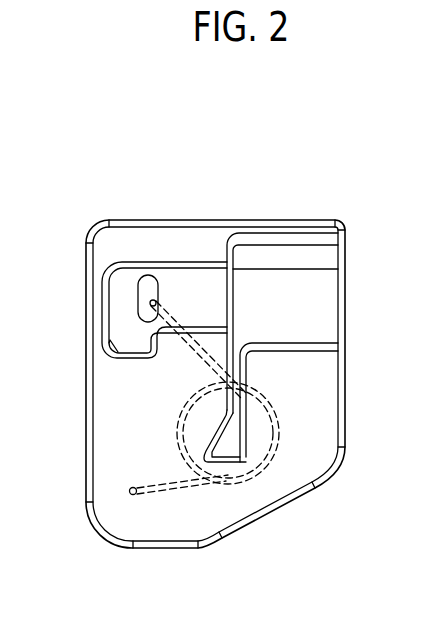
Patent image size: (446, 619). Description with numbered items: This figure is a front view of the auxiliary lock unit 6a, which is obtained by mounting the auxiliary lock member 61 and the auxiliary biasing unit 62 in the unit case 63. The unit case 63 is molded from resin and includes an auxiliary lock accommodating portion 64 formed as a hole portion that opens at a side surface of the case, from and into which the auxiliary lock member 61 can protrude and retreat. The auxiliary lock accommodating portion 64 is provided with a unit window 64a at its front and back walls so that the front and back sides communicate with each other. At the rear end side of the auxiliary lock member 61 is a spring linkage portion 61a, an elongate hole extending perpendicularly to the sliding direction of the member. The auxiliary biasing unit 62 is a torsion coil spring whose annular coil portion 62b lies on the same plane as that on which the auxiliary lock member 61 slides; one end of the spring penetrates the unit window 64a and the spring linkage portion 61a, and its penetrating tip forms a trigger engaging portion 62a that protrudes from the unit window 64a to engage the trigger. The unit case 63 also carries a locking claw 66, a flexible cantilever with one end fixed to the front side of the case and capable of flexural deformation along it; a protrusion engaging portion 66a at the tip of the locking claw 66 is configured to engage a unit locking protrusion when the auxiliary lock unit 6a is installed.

The auxiliary lock unit 6a is at (317, 168).
The auxiliary lock member 61 is at (193, 283).
The spring linkage portion 61a is at (150, 274).
The auxiliary biasing unit 62 is at (218, 384).
The trigger engaging portion 62a is at (143, 313).
The annular coil portion 62b is at (283, 456).
The unit case 63 is at (345, 362).
The auxiliary lock accommodating portion 64 is at (117, 295).
The unit window 64a is at (200, 327).
The locking claw 66 is at (245, 421).
The protrusion engaging portion 66a is at (230, 448).